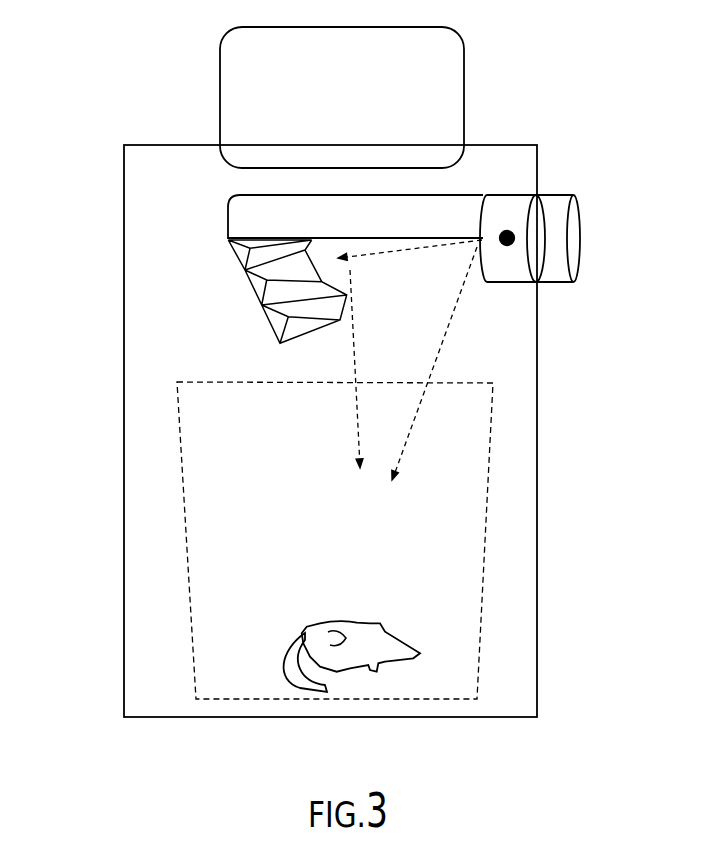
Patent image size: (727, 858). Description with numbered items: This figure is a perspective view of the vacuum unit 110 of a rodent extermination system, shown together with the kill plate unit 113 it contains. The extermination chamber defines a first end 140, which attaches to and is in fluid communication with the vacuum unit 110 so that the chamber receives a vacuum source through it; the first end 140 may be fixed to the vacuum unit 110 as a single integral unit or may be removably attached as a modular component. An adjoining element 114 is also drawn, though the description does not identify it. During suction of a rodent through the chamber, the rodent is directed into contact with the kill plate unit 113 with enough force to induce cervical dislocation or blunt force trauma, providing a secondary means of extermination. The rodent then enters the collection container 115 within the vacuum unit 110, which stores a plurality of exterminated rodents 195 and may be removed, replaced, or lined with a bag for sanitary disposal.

The vacuum unit 110 is at (85, 22).
The kill plate unit 113 is at (236, 293).
The support arm 114 is at (455, 205).
The collection container 115 is at (490, 529).
The first end 140 is at (585, 210).
The exterminated rodents 195 is at (387, 681).